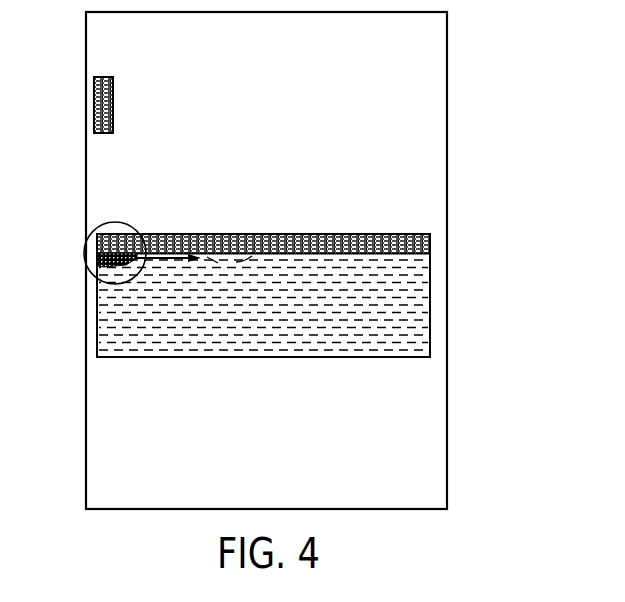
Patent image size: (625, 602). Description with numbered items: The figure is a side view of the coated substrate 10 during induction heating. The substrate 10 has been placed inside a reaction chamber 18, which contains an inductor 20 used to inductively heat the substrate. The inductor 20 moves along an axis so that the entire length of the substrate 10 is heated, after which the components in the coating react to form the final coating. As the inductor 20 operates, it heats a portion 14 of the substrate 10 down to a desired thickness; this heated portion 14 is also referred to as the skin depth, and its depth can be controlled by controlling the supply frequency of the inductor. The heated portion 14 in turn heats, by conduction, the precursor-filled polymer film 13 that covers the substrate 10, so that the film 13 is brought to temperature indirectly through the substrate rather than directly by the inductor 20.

The coated substrate 10 is at (404, 280).
The precursor-filled polymer film 13 is at (88, 231).
The heated portion of substrate 14 is at (102, 280).
The reaction chamber 18 is at (447, 415).
The inductor 20 is at (94, 113).